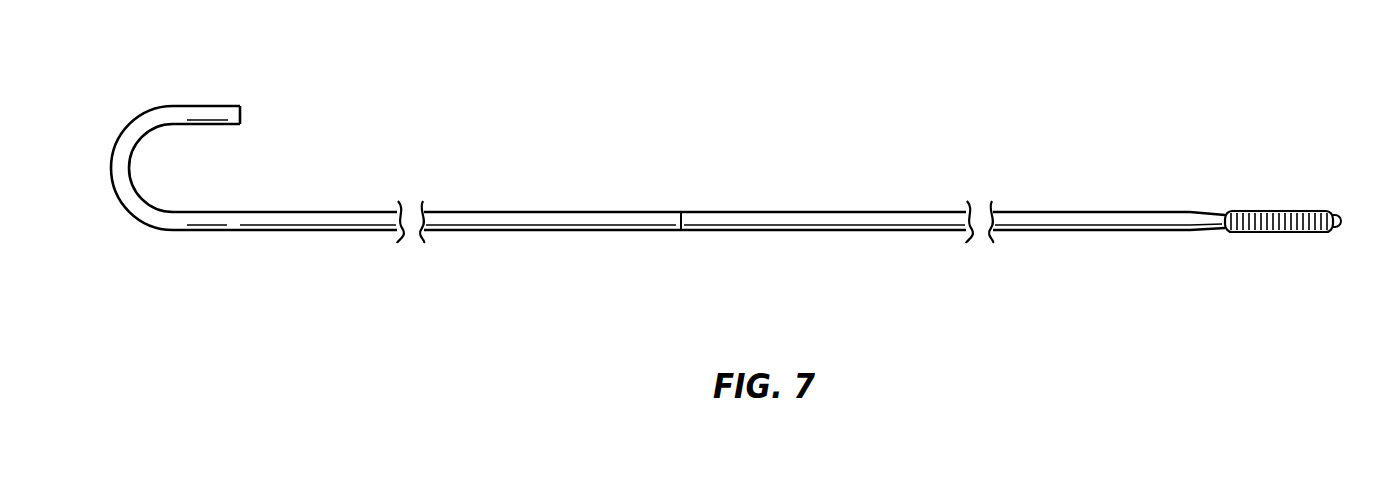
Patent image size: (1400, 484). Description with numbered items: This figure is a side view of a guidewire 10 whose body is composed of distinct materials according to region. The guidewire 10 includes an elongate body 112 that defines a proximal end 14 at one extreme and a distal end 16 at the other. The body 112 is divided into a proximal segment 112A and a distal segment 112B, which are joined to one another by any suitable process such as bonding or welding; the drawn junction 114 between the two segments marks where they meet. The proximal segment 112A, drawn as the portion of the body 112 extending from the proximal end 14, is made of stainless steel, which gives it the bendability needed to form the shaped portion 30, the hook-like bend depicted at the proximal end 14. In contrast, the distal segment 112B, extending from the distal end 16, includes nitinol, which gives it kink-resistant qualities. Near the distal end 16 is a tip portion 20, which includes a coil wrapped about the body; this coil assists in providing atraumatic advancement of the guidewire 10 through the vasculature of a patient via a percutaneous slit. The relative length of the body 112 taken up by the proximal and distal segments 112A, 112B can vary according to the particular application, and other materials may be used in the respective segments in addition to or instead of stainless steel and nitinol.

The guidewire 10 is at (688, 93).
The proximal end 14 is at (240, 114).
The shaped portion 30 is at (220, 100).
The body 112 is at (817, 231).
The proximal segment 112A is at (300, 222).
The distal segment 112B is at (1110, 222).
The junction 114 is at (676, 214).
The tip portion 20 is at (1291, 203).
The distal end 16 is at (1342, 221).